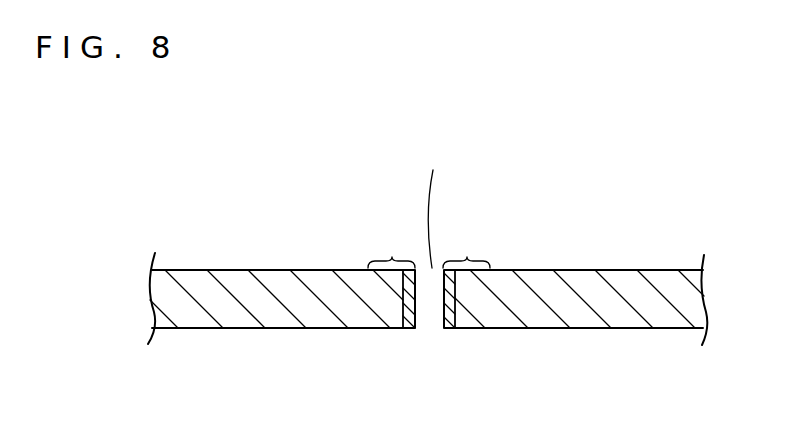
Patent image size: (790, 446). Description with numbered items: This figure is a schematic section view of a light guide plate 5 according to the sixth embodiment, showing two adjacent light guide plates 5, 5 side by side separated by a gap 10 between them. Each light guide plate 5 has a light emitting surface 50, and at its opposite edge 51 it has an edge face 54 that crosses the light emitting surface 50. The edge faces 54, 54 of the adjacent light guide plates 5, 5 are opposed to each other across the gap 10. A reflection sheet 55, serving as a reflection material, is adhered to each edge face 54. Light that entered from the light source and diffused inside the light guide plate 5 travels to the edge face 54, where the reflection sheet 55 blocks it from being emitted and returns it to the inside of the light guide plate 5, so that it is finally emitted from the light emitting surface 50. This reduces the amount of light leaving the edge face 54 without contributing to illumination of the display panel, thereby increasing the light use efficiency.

The light emitting surface 50 is at (185, 268).
The light guide plate 5 is at (277, 268).
The opposite edge 51 is at (429, 242).
The edge face 54 is at (403, 313).
The reflection sheet 55 is at (407, 330).
The cut line 10 is at (437, 200).